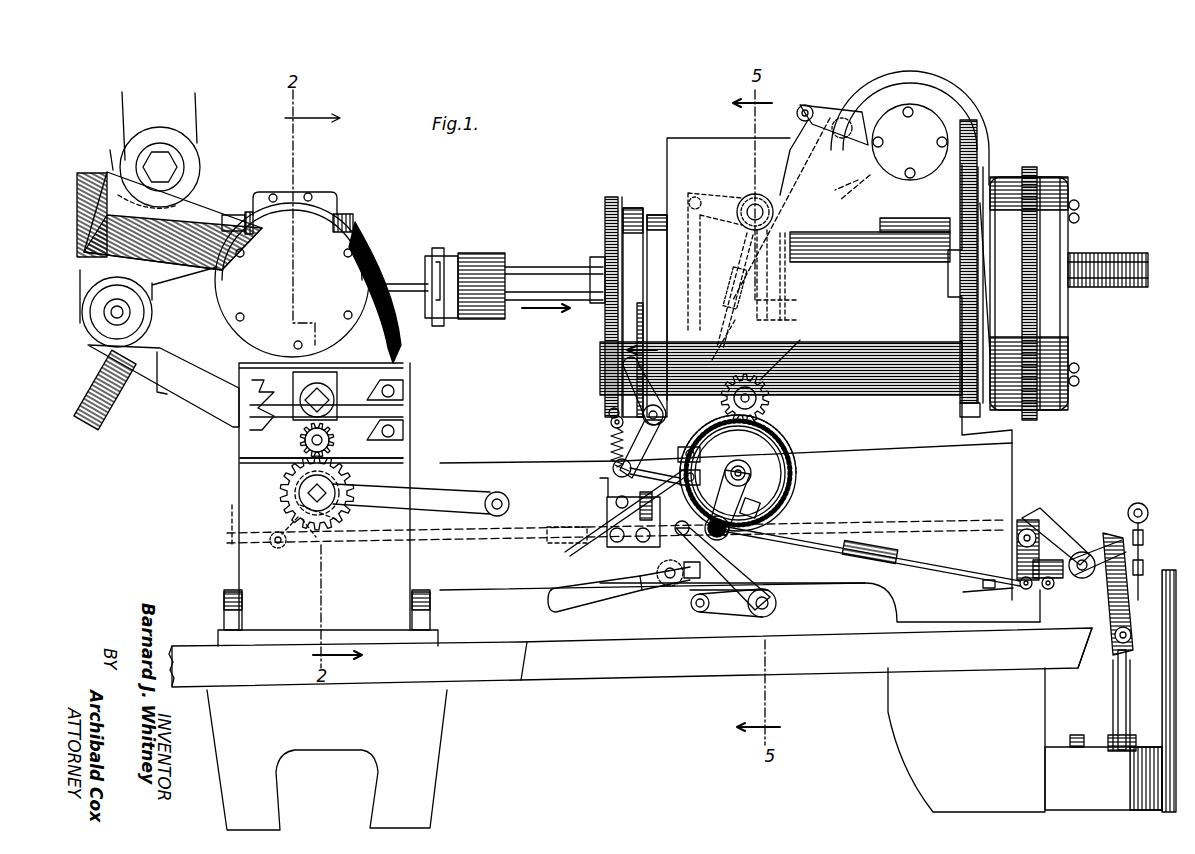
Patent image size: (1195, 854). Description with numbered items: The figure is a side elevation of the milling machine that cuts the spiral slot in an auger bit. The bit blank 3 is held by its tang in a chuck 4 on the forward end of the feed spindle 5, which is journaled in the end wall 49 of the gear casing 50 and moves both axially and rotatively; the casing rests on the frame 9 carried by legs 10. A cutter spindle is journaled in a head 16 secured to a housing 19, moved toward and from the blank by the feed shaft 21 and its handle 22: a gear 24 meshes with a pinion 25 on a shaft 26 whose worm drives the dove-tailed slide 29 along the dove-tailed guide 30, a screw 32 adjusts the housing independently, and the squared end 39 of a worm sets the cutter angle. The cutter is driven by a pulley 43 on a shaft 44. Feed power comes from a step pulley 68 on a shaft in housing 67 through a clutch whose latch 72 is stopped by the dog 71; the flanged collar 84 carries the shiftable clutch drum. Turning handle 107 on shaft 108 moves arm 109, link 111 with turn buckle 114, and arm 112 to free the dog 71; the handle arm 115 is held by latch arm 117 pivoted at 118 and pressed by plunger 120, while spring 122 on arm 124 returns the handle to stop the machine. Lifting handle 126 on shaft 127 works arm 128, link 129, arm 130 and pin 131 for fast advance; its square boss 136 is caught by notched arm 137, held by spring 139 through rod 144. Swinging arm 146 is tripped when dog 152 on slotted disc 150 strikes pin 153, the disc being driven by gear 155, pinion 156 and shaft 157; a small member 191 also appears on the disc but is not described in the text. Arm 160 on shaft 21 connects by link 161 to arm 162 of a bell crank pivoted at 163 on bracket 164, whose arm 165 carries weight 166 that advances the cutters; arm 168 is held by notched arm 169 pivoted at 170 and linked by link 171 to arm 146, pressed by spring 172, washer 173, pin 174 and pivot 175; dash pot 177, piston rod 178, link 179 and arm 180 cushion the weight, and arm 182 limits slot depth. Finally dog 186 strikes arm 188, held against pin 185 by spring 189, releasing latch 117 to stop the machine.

The bit blank 3 is at (385, 285).
The chuck 4 is at (485, 262).
The feed spindle 5 is at (545, 272).
The frame 9 is at (497, 492).
The legs 10 is at (447, 712).
The head 16 is at (218, 372).
The housing 19 is at (385, 345).
The feed shaft 21 is at (300, 488).
The handle 22 is at (411, 499).
The gear 24 is at (325, 520).
The pinion 25 is at (303, 446).
The shaft 26 is at (322, 446).
The dove-tailed slide 29 is at (245, 428).
The dove-tailed guide 30 is at (245, 452).
The screw 32 is at (330, 402).
The squared end of worm 39 is at (232, 216).
The pulley 43 is at (150, 324).
The shaft 44 is at (124, 310).
The end wall 49 is at (973, 182).
The gear casing 50 is at (806, 369).
The housing 67 is at (945, 105).
The step pulley 68 is at (975, 104).
The dog 71 is at (845, 172).
The latch 72 is at (866, 176).
The flanged collar 84 is at (795, 306).
The handle 107 is at (620, 367).
The transverse shaft 108 is at (610, 400).
The arm 109 is at (712, 345).
The link 111 is at (802, 150).
The arm 112 is at (822, 110).
The turn buckle 114 is at (742, 300).
The downwardly projecting arm 115 is at (625, 436).
The latch arm 117 is at (616, 503).
The pivot 118 is at (614, 472).
The spring pressed plunger 120 is at (636, 503).
The spring 122 is at (630, 452).
The arm 124 is at (634, 413).
The handle 126 is at (575, 608).
The transverse shaft 127 is at (777, 605).
The arm 128 is at (728, 612).
The link 129 is at (703, 250).
The arm 130 is at (716, 196).
The pin 131 is at (763, 213).
The square boss 136 is at (680, 585).
The notched arm 137 is at (634, 595).
The spring 139 is at (696, 612).
The rod 144 is at (682, 535).
The swinging arm 146 is at (770, 490).
The slotted disc 150 is at (775, 455).
The dog 152 is at (788, 510).
The pin 153 is at (727, 537).
The gear 155 is at (797, 463).
The pinion 156 is at (770, 402).
The shaft 157 is at (762, 378).
The downwardly extending arm 160 is at (276, 533).
The adjustable link 161 is at (443, 545).
The arm 162 is at (1045, 543).
The pivot shaft 163 is at (1075, 578).
The bracket 164 is at (1035, 523).
The arm 165 is at (1093, 547).
The weight 166 is at (1115, 686).
The arm 168 is at (1046, 590).
The notched arm 169 is at (1017, 558).
The pivot 170 is at (1016, 540).
The adjustable link 171 is at (871, 556).
The spring 172 is at (1010, 587).
The washer 173 is at (995, 588).
The pin 174 is at (983, 584).
The pivot 175 is at (1040, 588).
The dash pot 177 is at (1140, 780).
The piston rod 178 is at (1118, 710).
The link 179 is at (1117, 620).
The arm 180 is at (1090, 537).
The arm 182 is at (235, 500).
The pin 185 is at (612, 512).
The dog 186 is at (612, 548).
The arm 188 is at (644, 518).
The spring 189 is at (650, 480).
The clamp 191 is at (712, 463).